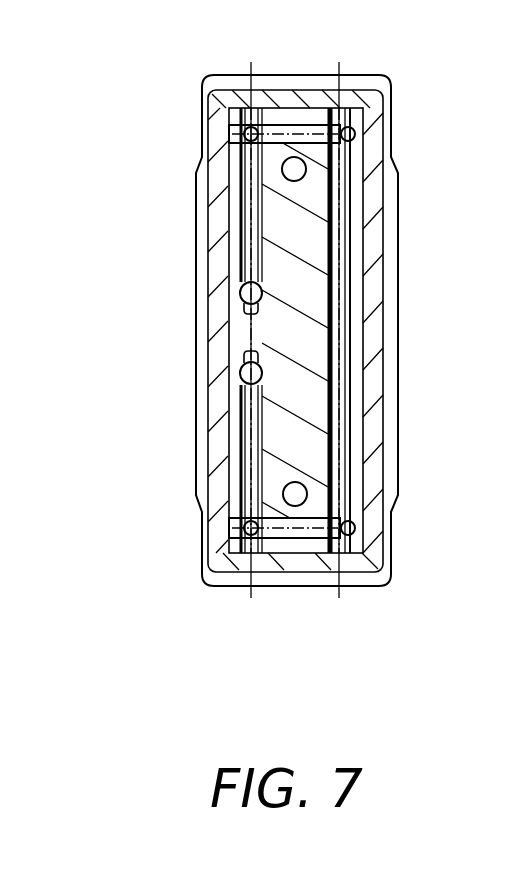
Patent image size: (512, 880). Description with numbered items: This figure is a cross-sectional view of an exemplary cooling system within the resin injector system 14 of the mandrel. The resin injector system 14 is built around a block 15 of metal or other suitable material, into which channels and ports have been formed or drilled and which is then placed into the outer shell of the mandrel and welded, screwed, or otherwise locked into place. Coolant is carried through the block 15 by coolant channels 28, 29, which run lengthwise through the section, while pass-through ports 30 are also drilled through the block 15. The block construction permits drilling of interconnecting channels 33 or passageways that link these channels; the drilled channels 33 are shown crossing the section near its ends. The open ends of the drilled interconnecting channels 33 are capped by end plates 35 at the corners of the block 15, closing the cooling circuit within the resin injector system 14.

The resin injector system 14 is at (125, 568).
The block 15 is at (374, 258).
The coolant channel 28 is at (240, 295).
The coolant channel 29 is at (240, 377).
The pass-through port 30 is at (306, 171).
The interconnecting channel 33 is at (253, 127).
The end plate 35 is at (227, 109).